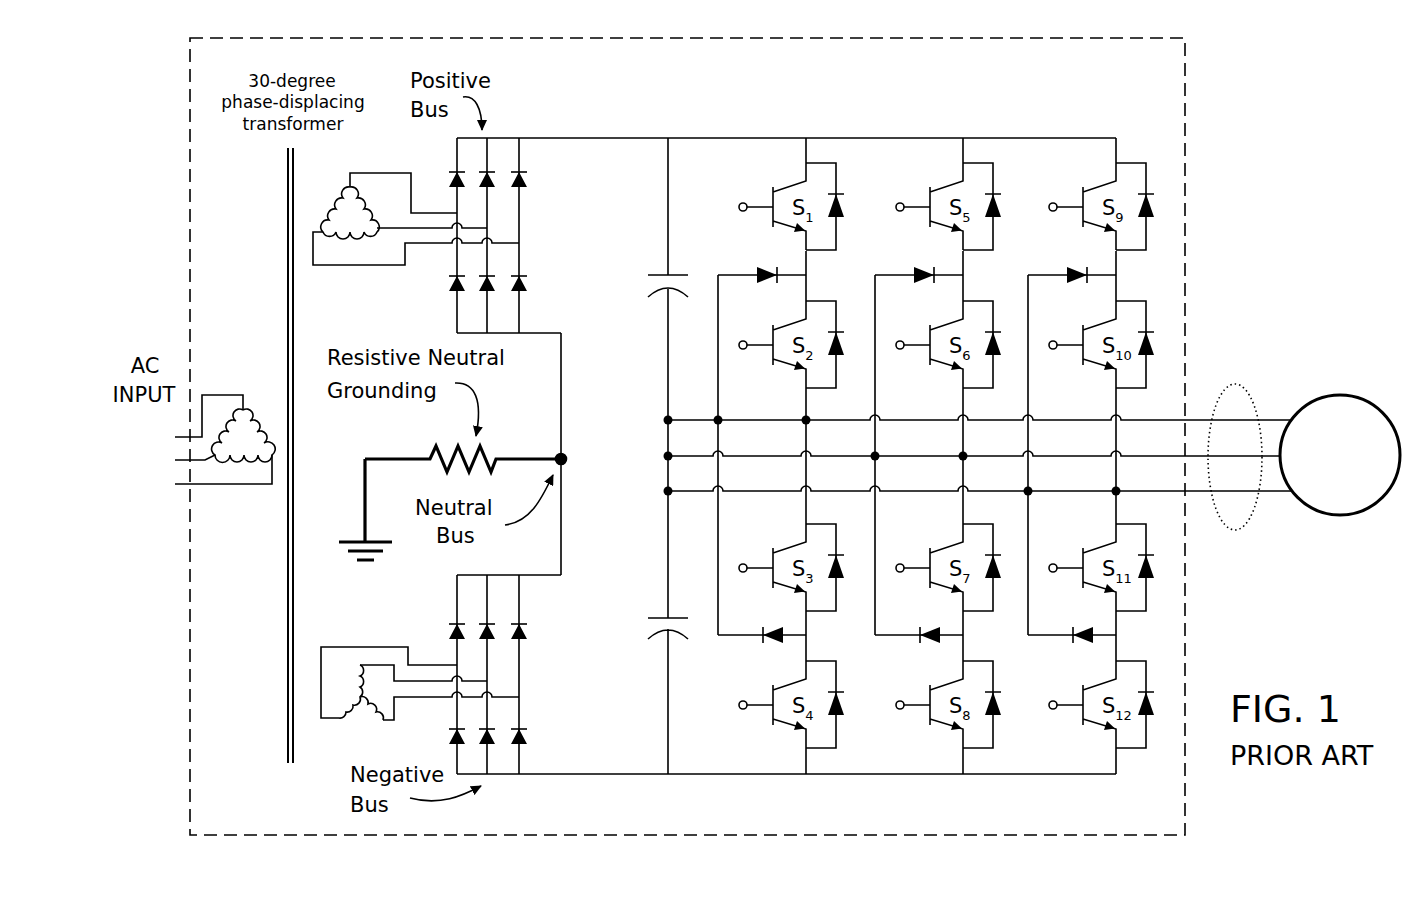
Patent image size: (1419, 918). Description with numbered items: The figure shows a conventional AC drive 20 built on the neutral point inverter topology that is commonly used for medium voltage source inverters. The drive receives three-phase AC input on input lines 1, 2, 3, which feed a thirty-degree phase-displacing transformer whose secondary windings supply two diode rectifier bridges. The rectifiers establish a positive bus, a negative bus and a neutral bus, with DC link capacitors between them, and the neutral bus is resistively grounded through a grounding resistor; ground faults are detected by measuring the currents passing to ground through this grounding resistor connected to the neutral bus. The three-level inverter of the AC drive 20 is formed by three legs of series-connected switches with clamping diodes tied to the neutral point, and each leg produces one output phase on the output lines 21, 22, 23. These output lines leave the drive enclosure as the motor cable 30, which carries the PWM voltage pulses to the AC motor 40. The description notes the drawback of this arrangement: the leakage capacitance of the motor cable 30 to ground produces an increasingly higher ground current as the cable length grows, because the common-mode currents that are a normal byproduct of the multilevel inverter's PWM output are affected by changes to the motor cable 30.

The AC input phase 1 is at (200, 423).
The AC input phase 2 is at (186, 460).
The AC input phase 3 is at (214, 477).
The AC drive 20 is at (687, 436).
The output phase line 21 is at (799, 423).
The output phase line 22 is at (956, 457).
The output phase line 23 is at (1110, 491).
The motor cable 30 is at (1243, 380).
The AC motor 40 is at (1342, 446).